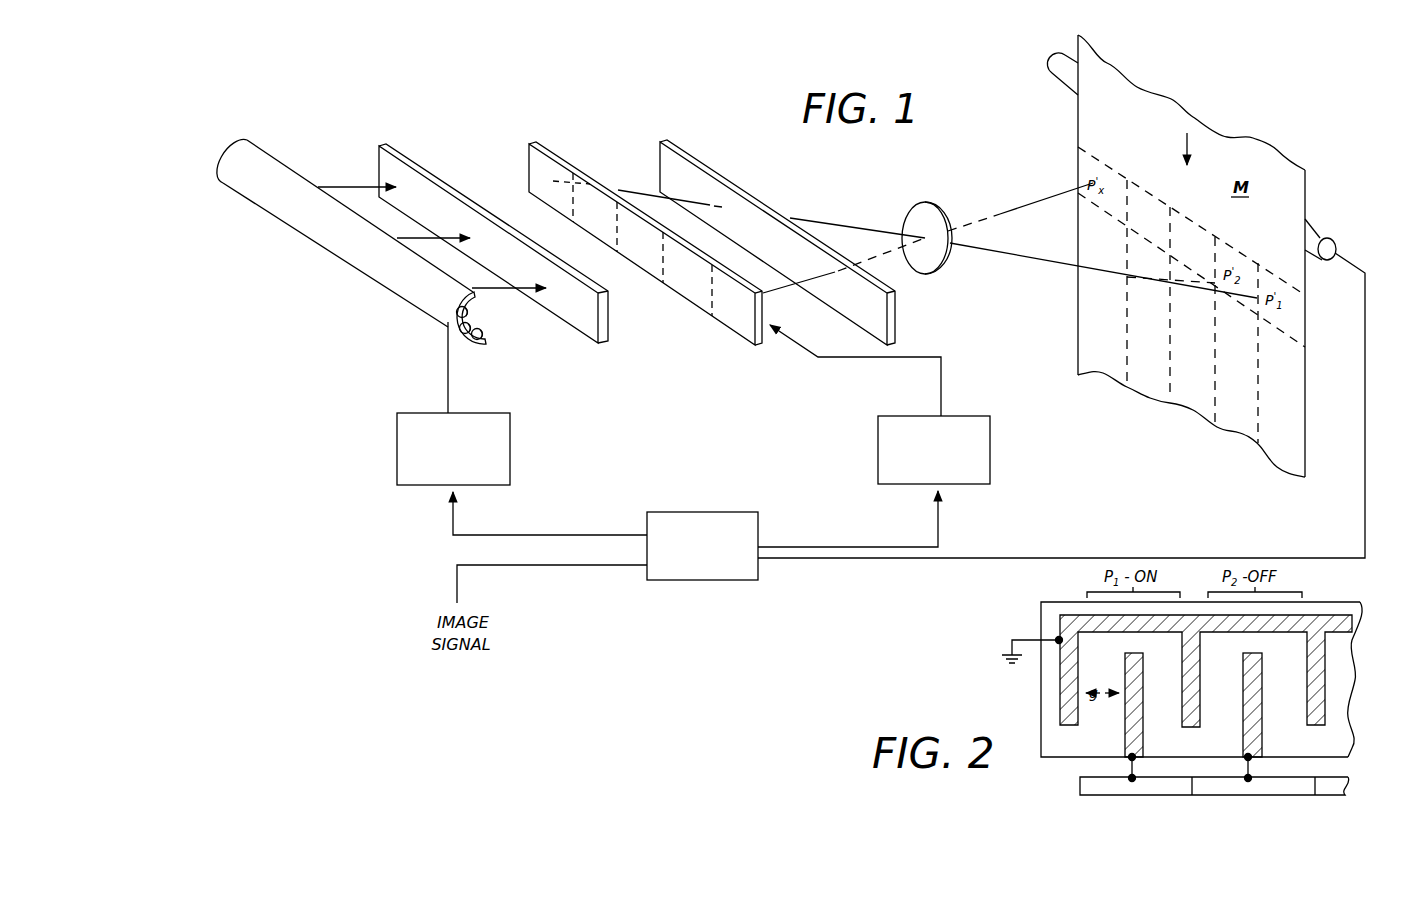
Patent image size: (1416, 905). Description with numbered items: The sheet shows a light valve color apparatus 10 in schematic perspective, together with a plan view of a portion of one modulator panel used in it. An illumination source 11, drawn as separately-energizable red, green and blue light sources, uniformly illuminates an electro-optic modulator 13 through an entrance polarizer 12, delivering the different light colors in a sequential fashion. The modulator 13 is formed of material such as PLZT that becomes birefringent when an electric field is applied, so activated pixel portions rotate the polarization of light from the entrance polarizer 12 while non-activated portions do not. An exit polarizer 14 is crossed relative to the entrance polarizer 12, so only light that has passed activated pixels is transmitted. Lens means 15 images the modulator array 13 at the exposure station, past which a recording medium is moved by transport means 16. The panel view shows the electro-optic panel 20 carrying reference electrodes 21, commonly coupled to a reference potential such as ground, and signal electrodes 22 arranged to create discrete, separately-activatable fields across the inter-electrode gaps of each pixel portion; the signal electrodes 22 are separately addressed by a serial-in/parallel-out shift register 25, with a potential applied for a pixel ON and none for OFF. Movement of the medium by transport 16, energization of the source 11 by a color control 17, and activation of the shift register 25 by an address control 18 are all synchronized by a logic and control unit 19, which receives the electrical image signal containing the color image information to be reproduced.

In FIG. 1, the light valve color apparatus 10 is at (593, 91).
In FIG. 1, the illumination source 11 is at (257, 153).
In FIG. 1, the entrance polarizer 12 is at (398, 153).
In FIG. 1, the electro-optic modulator 13 is at (553, 153).
In FIG. 1, the exit polarizer 14 is at (686, 153).
In FIG. 1, the lens means 15 is at (927, 203).
In FIG. 1, the transport means 16 is at (1318, 225).
In FIG. 1, the color control 17 is at (490, 413).
In FIG. 1, the address control 18 is at (967, 416).
In FIG. 1, the logic and control unit 19 is at (738, 512).
In FIG. 2, the electro-optic panel 20 is at (1041, 622).
In FIG. 2, the reference electrodes 21 is at (1350, 624).
In FIG. 2, the signal electrodes 22 is at (1142, 683).
In FIG. 2, the serial-in/parallel-out shift register 25 is at (1338, 778).